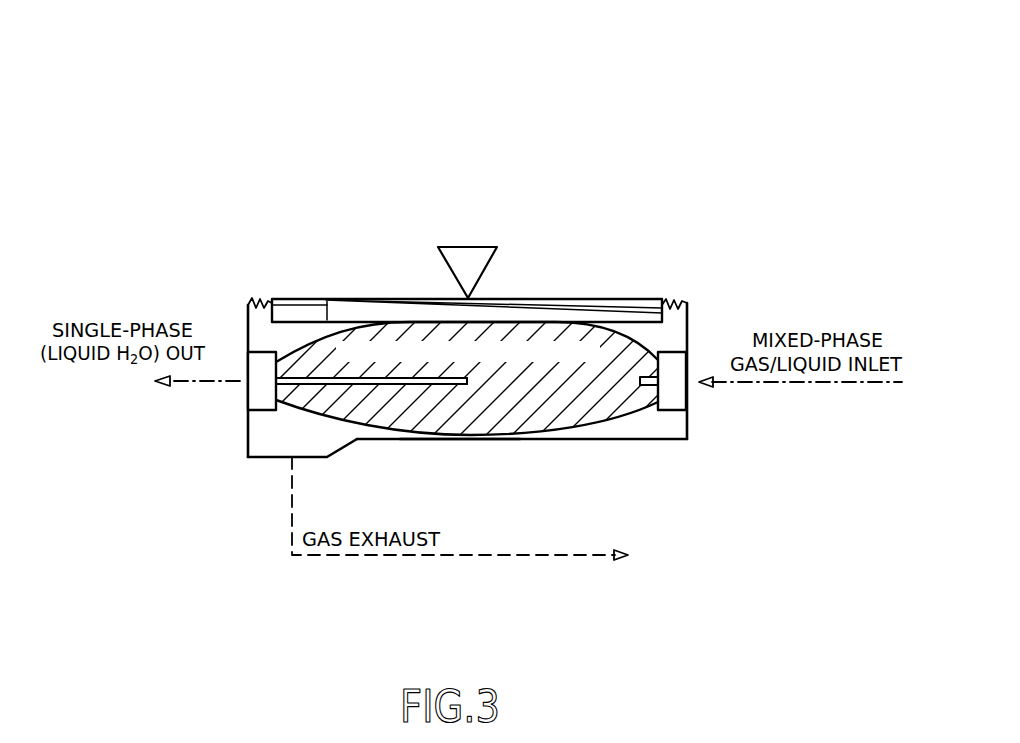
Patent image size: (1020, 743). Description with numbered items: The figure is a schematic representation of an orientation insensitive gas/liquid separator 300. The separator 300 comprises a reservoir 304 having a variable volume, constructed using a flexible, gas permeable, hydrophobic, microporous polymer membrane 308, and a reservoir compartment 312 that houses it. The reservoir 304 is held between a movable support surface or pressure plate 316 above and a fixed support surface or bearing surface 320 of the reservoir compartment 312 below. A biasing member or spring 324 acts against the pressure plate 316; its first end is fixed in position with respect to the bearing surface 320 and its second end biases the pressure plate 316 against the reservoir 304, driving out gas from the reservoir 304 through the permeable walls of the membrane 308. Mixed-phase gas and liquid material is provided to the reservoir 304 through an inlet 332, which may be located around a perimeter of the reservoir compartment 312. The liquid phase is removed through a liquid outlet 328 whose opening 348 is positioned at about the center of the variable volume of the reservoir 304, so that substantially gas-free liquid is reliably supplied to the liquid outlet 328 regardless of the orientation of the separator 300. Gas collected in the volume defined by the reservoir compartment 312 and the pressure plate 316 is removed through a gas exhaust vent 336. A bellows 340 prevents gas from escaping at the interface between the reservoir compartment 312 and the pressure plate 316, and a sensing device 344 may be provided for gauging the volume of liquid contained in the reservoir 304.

The gas/liquid separator 300 is at (605, 106).
The reservoir 304 is at (600, 425).
The membrane 308 is at (587, 335).
The reservoir compartment 312 is at (690, 325).
The pressure plate 316 is at (326, 300).
The bearing surface 320 is at (458, 439).
The spring 324 is at (397, 300).
The liquid outlet 328 is at (435, 380).
The inlet 332 is at (648, 402).
The gas exhaust vent 336 is at (282, 457).
The bellows 340 is at (262, 300).
The sensing device 344 is at (470, 247).
The opening 348 is at (470, 380).